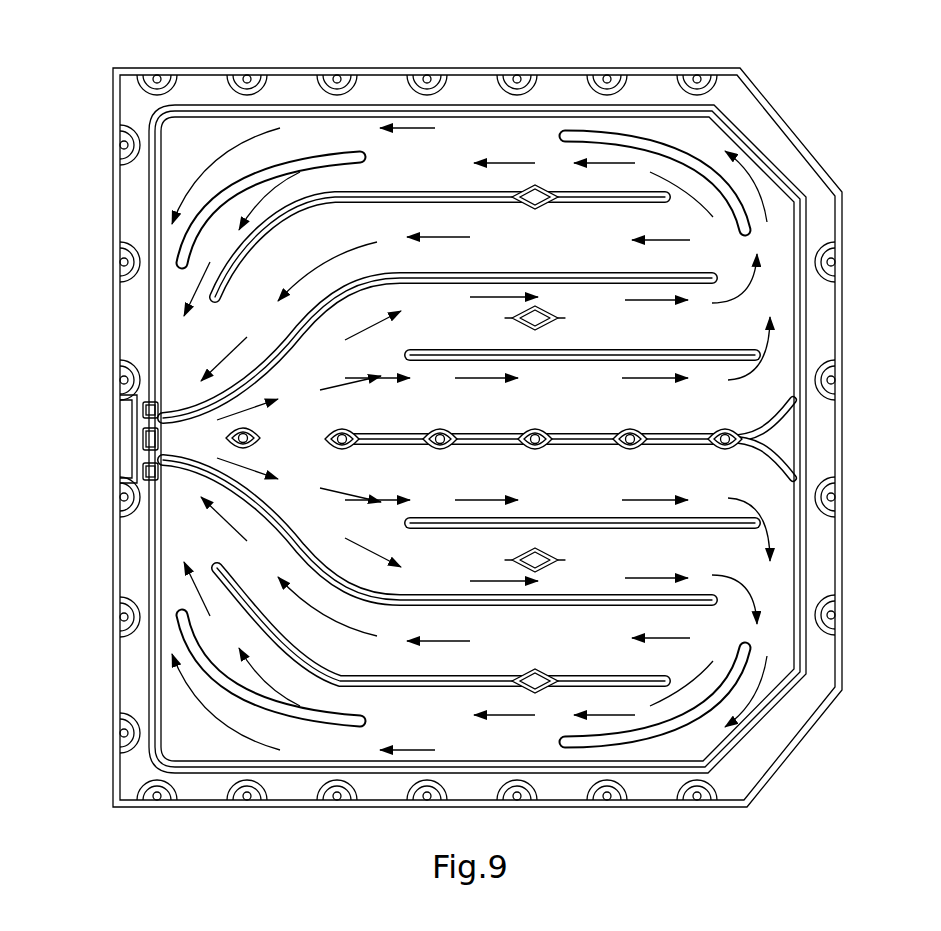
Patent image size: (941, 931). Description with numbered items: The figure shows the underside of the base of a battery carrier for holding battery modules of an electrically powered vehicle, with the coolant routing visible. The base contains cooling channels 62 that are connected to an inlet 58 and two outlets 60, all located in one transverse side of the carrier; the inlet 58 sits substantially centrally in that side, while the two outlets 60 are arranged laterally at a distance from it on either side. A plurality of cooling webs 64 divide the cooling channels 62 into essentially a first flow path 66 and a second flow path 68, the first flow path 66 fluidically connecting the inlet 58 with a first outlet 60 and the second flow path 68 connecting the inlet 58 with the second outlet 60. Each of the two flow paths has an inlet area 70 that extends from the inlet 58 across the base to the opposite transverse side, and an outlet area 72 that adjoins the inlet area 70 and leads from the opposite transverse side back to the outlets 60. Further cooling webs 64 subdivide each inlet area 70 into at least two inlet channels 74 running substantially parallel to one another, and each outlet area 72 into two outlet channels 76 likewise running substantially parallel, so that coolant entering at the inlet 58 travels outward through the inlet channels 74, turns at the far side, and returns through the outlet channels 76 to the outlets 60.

The inlet 58 is at (143, 438).
The outlets 60 is at (143, 406).
The cooling channels 62 is at (768, 300).
The cooling webs 64 is at (178, 262).
The first flow path 66 is at (185, 520).
The second flow path 68 is at (411, 127).
The inlet area 70 is at (287, 373).
The outlet area 72 is at (192, 348).
The inlet channels 74 is at (590, 338).
The outlet channels 76 is at (415, 170).